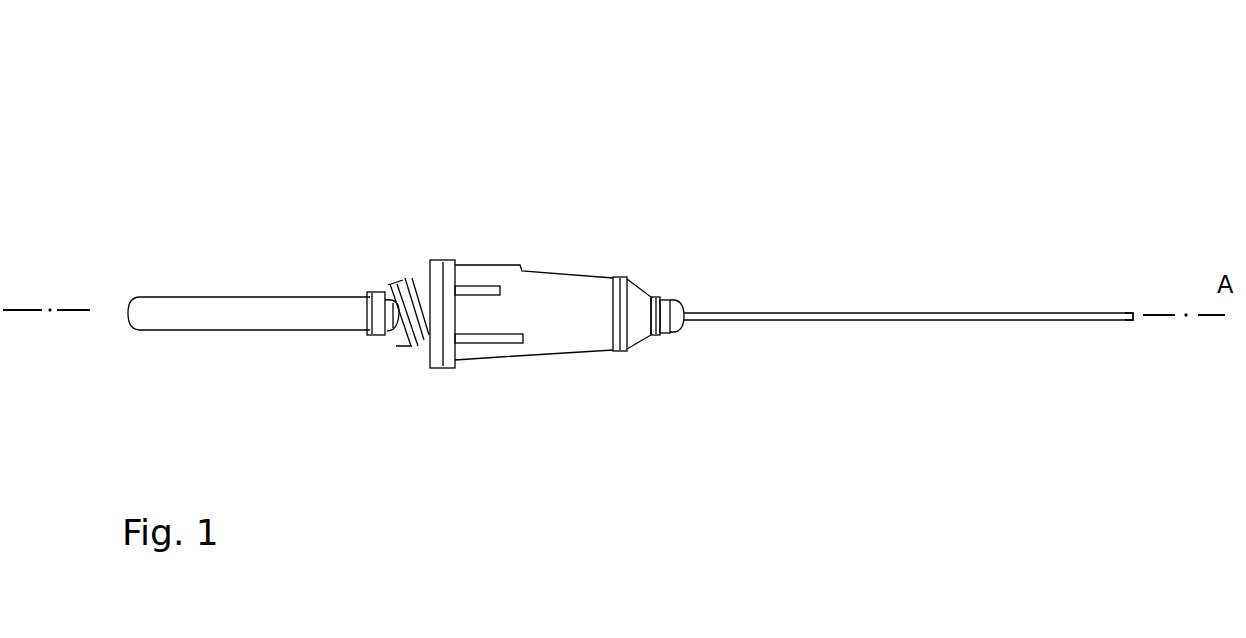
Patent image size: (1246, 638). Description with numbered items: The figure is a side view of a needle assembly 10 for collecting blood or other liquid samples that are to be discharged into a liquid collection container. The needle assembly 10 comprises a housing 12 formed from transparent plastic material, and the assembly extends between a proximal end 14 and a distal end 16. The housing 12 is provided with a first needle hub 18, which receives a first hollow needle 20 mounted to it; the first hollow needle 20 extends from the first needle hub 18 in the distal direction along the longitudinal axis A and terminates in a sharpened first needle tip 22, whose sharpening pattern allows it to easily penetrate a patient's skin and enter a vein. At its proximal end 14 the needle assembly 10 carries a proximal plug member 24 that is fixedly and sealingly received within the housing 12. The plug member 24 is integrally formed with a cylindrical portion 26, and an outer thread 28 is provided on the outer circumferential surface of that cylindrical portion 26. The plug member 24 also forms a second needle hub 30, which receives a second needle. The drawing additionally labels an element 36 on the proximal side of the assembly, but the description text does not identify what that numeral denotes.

The needle assembly 10 is at (679, 178).
The housing 12 is at (551, 266).
The proximal end 14 is at (388, 343).
The distal end 16 is at (672, 330).
The first needle hub 18 is at (665, 297).
The first hollow needle 20 is at (870, 313).
The first needle tip 22 is at (1128, 316).
The proximal plug member 24 is at (437, 254).
The cylindrical portion 26 is at (392, 288).
The outer thread 28 is at (414, 348).
The second needle hub 30 is at (411, 288).
The plug 36 is at (153, 297).